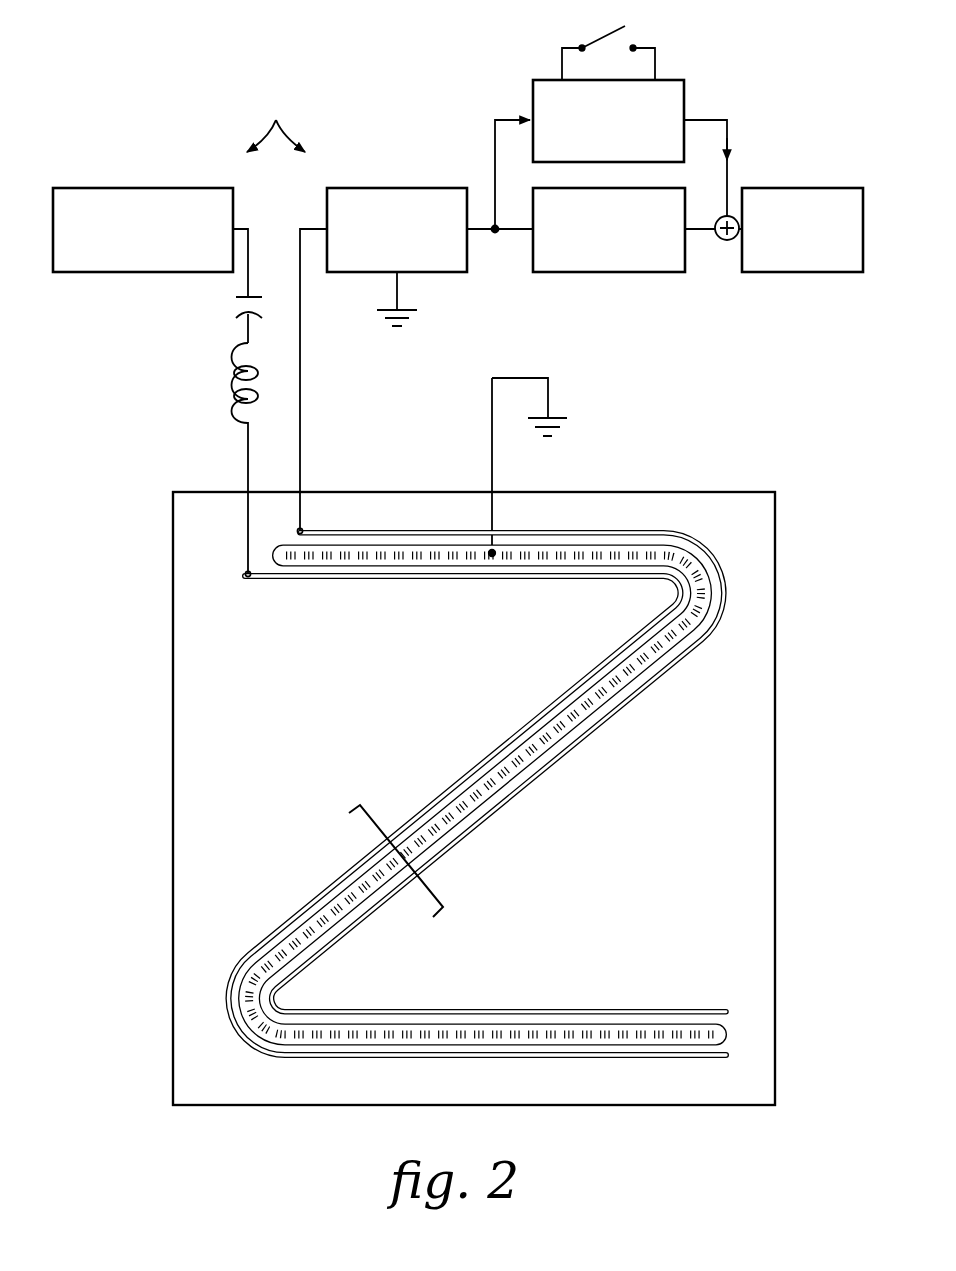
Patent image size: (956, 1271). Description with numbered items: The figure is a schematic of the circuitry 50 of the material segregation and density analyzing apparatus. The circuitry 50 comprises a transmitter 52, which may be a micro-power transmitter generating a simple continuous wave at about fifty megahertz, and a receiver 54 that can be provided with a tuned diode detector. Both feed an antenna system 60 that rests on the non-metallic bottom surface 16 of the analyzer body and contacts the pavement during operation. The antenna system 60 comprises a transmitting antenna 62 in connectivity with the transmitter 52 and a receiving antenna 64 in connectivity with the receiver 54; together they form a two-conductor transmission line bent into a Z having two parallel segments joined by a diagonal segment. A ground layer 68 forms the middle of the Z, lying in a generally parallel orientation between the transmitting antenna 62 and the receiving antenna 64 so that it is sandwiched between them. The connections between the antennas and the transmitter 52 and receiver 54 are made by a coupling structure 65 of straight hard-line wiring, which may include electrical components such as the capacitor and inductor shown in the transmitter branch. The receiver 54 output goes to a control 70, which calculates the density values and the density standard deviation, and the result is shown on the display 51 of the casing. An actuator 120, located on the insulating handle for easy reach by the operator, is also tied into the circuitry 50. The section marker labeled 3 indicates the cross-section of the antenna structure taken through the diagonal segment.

The transmitter 52 is at (128, 262).
The receiver 54 is at (382, 262).
The actuator 120 is at (586, 154).
The control 70 is at (594, 262).
The display 51 is at (816, 262).
The circuitry 50 is at (126, 433).
The coupling structure 65 is at (276, 120).
The antenna system 60 is at (150, 758).
The receiving antenna 64 is at (378, 531).
The ground layer 68 is at (543, 735).
The transmitting antenna 62 is at (310, 580).
The bottom surface 16 is at (757, 873).
The section line of FIG. 3 is at (304, 851).